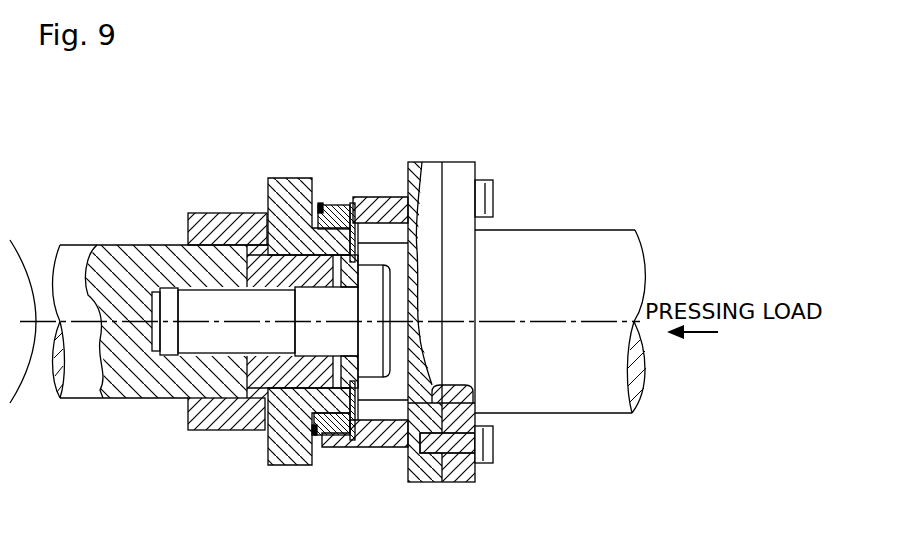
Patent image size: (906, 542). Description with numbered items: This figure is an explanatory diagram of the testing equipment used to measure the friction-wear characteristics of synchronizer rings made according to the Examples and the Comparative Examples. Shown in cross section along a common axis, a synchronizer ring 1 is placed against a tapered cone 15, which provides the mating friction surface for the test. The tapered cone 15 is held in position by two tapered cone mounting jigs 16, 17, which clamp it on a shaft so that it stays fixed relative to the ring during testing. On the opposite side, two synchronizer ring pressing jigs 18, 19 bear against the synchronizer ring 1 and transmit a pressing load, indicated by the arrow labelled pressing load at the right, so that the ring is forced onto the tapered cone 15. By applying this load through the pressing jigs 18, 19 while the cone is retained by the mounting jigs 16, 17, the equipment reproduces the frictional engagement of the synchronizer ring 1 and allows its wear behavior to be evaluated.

The synchronizer ring 1 is at (332, 214).
The tapered cone 15 is at (265, 220).
The tapered cone mounting jig 16 is at (214, 228).
The tapered cone mounting jig 17 is at (352, 222).
The synchronizer ring pressing jig 18 is at (394, 208).
The synchronizer ring pressing jig 19 is at (459, 182).